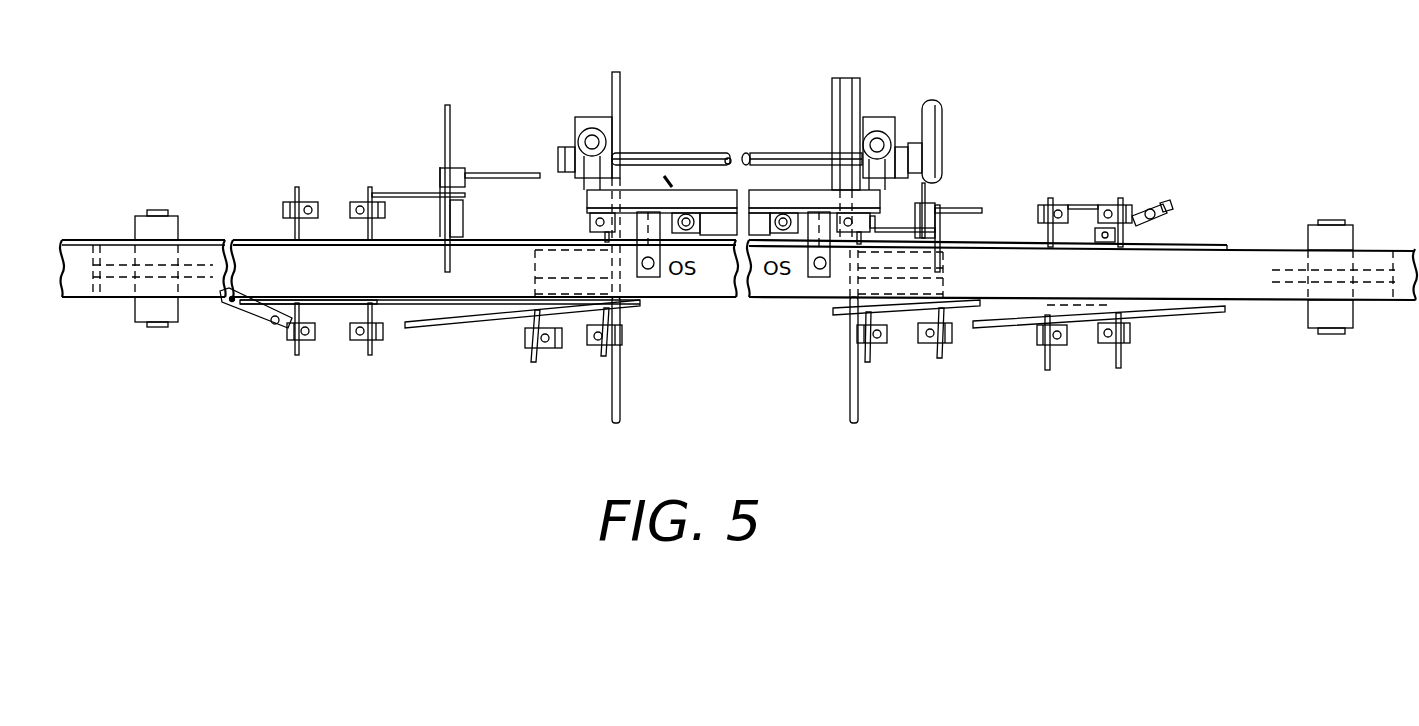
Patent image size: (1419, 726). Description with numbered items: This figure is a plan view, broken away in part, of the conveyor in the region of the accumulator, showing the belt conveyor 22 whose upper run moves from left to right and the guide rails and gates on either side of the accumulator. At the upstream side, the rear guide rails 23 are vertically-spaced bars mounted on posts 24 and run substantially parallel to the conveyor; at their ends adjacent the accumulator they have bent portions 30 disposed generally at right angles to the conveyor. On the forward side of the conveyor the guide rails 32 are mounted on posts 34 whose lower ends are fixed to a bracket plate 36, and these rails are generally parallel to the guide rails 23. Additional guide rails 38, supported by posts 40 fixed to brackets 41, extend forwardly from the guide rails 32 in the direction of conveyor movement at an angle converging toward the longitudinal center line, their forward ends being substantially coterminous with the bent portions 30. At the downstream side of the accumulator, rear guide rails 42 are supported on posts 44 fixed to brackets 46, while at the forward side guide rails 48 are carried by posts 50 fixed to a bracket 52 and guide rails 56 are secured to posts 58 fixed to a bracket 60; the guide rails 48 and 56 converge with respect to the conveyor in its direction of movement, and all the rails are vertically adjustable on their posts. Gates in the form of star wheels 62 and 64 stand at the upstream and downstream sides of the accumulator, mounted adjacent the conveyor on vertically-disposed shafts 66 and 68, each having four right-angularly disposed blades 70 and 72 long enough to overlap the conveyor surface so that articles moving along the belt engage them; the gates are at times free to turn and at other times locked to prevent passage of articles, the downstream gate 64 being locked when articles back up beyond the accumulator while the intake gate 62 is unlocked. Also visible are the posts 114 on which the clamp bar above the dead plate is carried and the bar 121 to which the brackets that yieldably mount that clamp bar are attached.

The belt conveyor 22 is at (1268, 302).
The guide rails 23 is at (395, 245).
The posts 24 is at (360, 204).
The bent portions 30 is at (672, 180).
The guide rails 32 is at (342, 305).
The posts 34 is at (355, 342).
The bracket plate 36 is at (327, 337).
The guide rails 38 is at (462, 329).
The posts 40 is at (546, 348).
The brackets 41 is at (578, 342).
The guide rails 42 is at (973, 244).
The posts 44 is at (1062, 206).
The brackets 46 is at (1090, 207).
The guide rails 48 is at (954, 313).
The posts 50 is at (930, 337).
The bracket 52 is at (888, 344).
The guide rails 56 is at (1183, 321).
The posts 58 is at (1063, 344).
The bracket 60 is at (1130, 346).
The star wheel 62 is at (458, 152).
The star wheel 64 is at (963, 177).
The shaft 66 is at (450, 186).
The shaft 68 is at (926, 213).
The blades 70 is at (512, 178).
The blades 72 is at (985, 210).
The posts 114 is at (591, 128).
The bar 121 is at (773, 190).